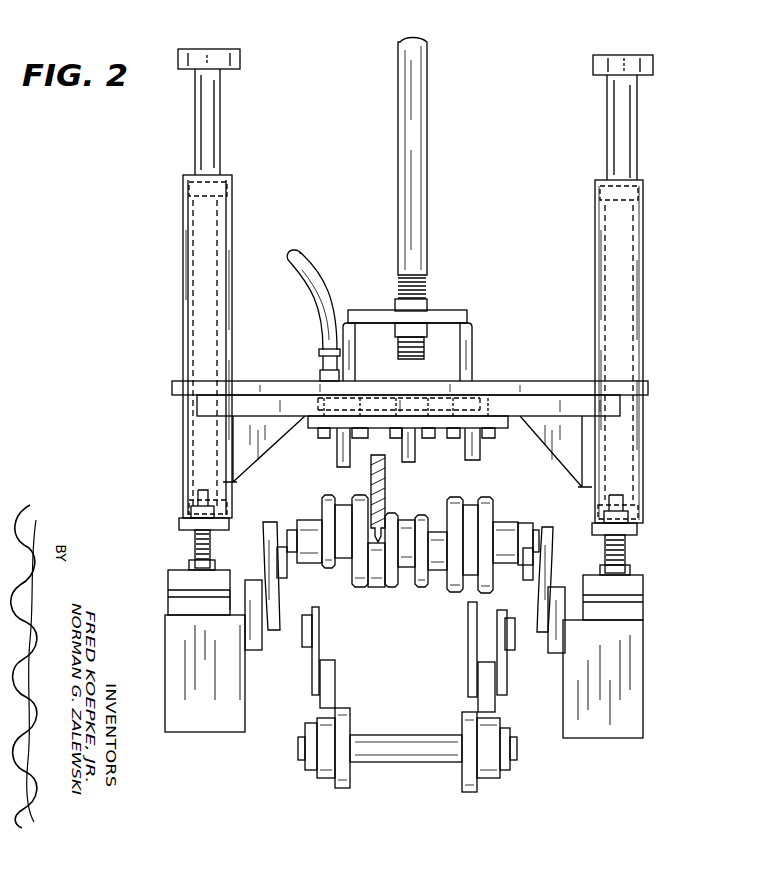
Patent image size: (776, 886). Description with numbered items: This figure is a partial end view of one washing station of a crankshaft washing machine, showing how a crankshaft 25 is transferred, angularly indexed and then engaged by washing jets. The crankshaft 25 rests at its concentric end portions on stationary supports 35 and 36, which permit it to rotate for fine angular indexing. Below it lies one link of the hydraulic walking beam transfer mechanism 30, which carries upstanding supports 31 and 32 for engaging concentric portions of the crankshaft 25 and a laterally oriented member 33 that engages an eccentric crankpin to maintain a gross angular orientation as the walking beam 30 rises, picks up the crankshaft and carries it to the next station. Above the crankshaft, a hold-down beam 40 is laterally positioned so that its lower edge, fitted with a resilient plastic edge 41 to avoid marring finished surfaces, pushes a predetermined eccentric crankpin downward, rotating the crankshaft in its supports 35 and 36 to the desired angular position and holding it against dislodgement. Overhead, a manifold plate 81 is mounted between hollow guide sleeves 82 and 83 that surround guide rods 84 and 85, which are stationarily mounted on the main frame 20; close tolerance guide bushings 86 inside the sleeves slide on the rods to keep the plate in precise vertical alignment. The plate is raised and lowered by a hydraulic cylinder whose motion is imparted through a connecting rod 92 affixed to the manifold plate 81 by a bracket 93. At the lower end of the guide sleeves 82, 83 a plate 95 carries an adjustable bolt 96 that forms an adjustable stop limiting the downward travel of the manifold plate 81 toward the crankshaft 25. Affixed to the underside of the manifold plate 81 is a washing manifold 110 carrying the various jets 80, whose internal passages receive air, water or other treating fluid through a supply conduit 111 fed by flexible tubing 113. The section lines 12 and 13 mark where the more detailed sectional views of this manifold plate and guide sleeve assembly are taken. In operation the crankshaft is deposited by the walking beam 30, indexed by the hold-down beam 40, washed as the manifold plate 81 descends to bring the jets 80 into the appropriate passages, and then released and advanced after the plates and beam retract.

The section line 12— 12 is at (127, 169).
The section line 13— 13 is at (112, 526).
The main frame 20 is at (200, 724).
The crankshaft 25 is at (503, 523).
The walking beam transfer mechanism 30 is at (400, 754).
The upstanding support 31 is at (319, 644).
The upstanding support 32 is at (502, 652).
The laterally oriented member 33 is at (468, 646).
The stationary support 35 is at (266, 556).
The stationary support 36 is at (544, 568).
The hold-down beam 40 is at (386, 498).
The resilient plastic edge 41 is at (378, 587).
The jets 80 is at (478, 458).
The manifold plate 81 is at (538, 392).
The guide sleeve 82 is at (232, 227).
The guide sleeve 83 is at (643, 252).
The guide rod 84 is at (215, 127).
The guide rod 85 is at (627, 106).
The guide bushing 86 is at (227, 185).
The connecting rod 92 is at (414, 216).
The bracket 93 is at (446, 318).
The plate 95 is at (182, 522).
The adjustable bolt 96 is at (196, 552).
The washing manifold 110 is at (312, 424).
The supply conduit 111 is at (318, 370).
The flexible tubing 113 is at (310, 263).